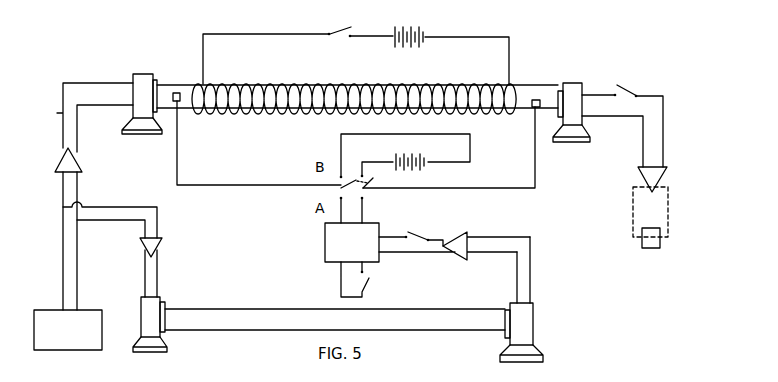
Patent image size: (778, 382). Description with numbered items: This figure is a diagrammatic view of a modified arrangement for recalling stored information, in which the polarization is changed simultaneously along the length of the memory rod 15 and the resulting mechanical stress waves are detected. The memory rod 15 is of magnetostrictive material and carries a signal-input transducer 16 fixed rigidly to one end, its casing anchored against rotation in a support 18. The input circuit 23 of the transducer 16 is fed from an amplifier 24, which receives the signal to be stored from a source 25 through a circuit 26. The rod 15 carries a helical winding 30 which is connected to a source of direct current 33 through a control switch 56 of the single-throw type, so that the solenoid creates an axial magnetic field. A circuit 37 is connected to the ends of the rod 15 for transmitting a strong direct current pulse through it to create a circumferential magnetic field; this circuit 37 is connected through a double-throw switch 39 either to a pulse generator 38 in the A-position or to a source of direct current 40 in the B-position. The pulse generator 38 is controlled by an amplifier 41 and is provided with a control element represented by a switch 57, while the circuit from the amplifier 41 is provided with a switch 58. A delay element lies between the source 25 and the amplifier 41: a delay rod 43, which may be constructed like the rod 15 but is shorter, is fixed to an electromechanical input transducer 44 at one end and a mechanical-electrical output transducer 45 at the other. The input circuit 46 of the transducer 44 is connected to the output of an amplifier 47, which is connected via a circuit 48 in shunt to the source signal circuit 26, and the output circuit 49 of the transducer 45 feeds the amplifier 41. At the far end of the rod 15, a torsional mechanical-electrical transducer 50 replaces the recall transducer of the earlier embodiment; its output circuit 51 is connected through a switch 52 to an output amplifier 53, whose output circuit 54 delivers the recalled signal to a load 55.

The memory rod 15 is at (172, 81).
The signal-input transducer 16 is at (142, 75).
The support 18 is at (140, 134).
The input circuit 23 is at (84, 117).
The amplifier 24 is at (76, 163).
The signal source 25 is at (44, 310).
The source signal circuit 26 is at (56, 244).
The helical winding 30 is at (356, 84).
The source of direct current 33 is at (418, 31).
The circuit 37 is at (268, 186).
The pulse generator 38 is at (325, 253).
The double-throw switch 39 is at (375, 186).
The source of direct current 40 is at (430, 168).
The amplifier 41 is at (468, 235).
The delay rod 43 is at (255, 331).
The input transducer 44 is at (139, 305).
The output transducer 45 is at (533, 322).
The input circuit 46 is at (162, 282).
The amplifier 47 is at (161, 245).
The circuit 48 is at (103, 207).
The output circuit 49 is at (531, 279).
The torsional mechanical-electrical transducer 50 is at (571, 84).
The output circuit 51 is at (627, 118).
The switch 52 is at (627, 89).
The output amplifier 53 is at (666, 179).
The output circuit 54 is at (668, 203).
The load 55 is at (661, 242).
The control switch 56 is at (340, 31).
The switch 57 is at (371, 283).
The switch 58 is at (418, 235).